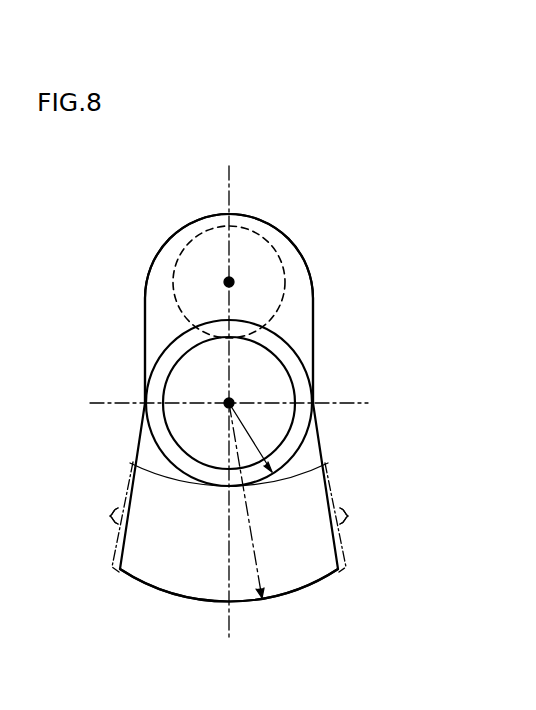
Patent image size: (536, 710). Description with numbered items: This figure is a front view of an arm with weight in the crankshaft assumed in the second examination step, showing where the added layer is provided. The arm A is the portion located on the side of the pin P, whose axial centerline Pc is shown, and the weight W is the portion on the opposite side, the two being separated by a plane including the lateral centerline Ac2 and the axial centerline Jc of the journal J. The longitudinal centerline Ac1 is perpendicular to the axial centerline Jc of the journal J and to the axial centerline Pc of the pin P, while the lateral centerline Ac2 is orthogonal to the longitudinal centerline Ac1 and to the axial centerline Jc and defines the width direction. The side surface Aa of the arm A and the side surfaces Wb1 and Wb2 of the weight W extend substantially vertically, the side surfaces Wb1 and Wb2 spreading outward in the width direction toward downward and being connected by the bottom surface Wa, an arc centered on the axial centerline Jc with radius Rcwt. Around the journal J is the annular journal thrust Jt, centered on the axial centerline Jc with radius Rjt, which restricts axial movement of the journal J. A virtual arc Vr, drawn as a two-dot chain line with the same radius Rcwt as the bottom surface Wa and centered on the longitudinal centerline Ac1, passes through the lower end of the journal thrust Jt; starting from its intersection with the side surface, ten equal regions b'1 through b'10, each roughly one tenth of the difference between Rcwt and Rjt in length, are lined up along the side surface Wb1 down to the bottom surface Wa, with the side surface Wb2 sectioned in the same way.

The pin P is at (217, 222).
The arm A is at (182, 227).
The axial centerline of the pin Pc is at (229, 282).
The longitudinal centerline Ac1 is at (230, 257).
The side surface of the arm Aa is at (143, 322).
The journal J is at (150, 373).
The journal thrust Jt is at (305, 375).
The axial centerline of the journal Jc is at (229, 403).
The lateral centerline Ac2 is at (350, 402).
The virtual arc Vr is at (128, 460).
The radius of the journal thrust Rjt is at (250, 437).
The web region 1 b'1 is at (221, 502).
The web region 10 b'10 is at (226, 527).
The side surface of the weight Wb1 is at (133, 488).
The side surface of the weight Wb2 is at (327, 488).
The radius of the bottom surface Rcwt is at (265, 500).
The weight W is at (130, 570).
The bottom surface Wa is at (190, 601).